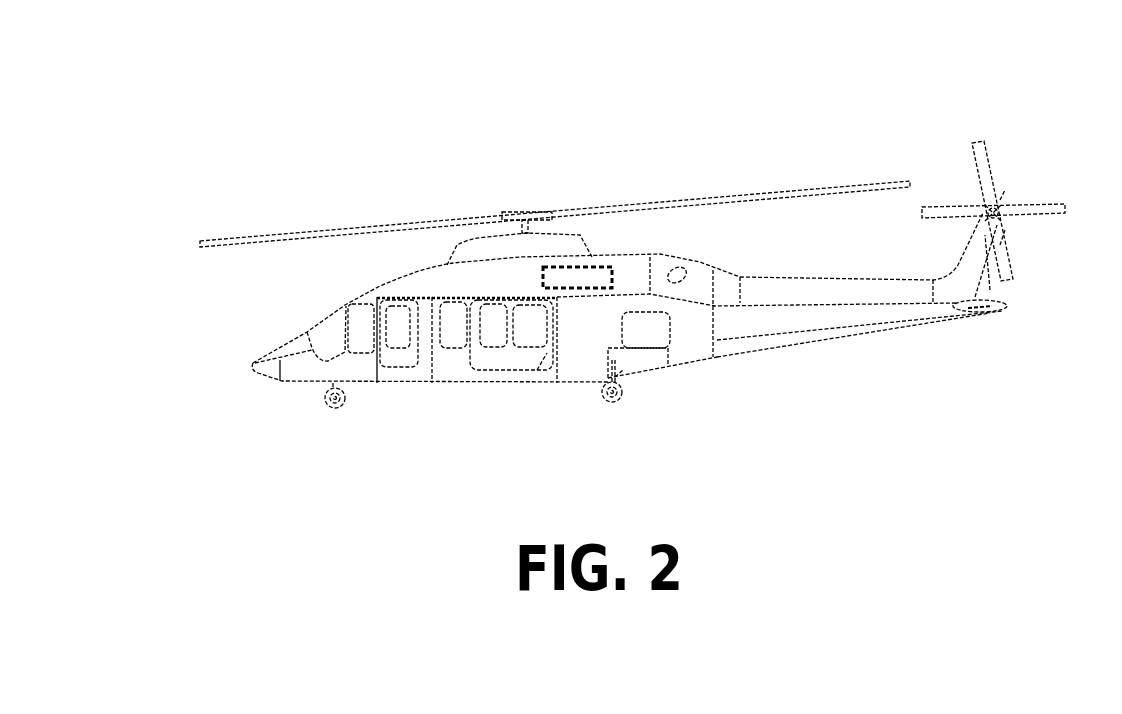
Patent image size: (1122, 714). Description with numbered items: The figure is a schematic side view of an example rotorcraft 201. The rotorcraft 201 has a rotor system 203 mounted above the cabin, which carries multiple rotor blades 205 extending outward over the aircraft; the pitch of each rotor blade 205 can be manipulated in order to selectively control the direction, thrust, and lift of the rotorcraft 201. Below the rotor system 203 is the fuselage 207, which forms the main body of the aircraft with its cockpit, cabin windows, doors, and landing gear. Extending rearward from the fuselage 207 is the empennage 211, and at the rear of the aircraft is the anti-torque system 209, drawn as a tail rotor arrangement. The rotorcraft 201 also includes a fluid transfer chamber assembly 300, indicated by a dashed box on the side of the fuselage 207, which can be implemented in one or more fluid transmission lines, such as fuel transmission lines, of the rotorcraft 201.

The rotorcraft 201 is at (410, 105).
The rotor system 203 is at (561, 177).
The rotor blade 205 is at (767, 190).
The fuselage 207 is at (447, 384).
The anti-torque system 209 is at (1026, 174).
The empennage 211 is at (843, 340).
The fluid transfer chamber assembly 300 is at (580, 280).